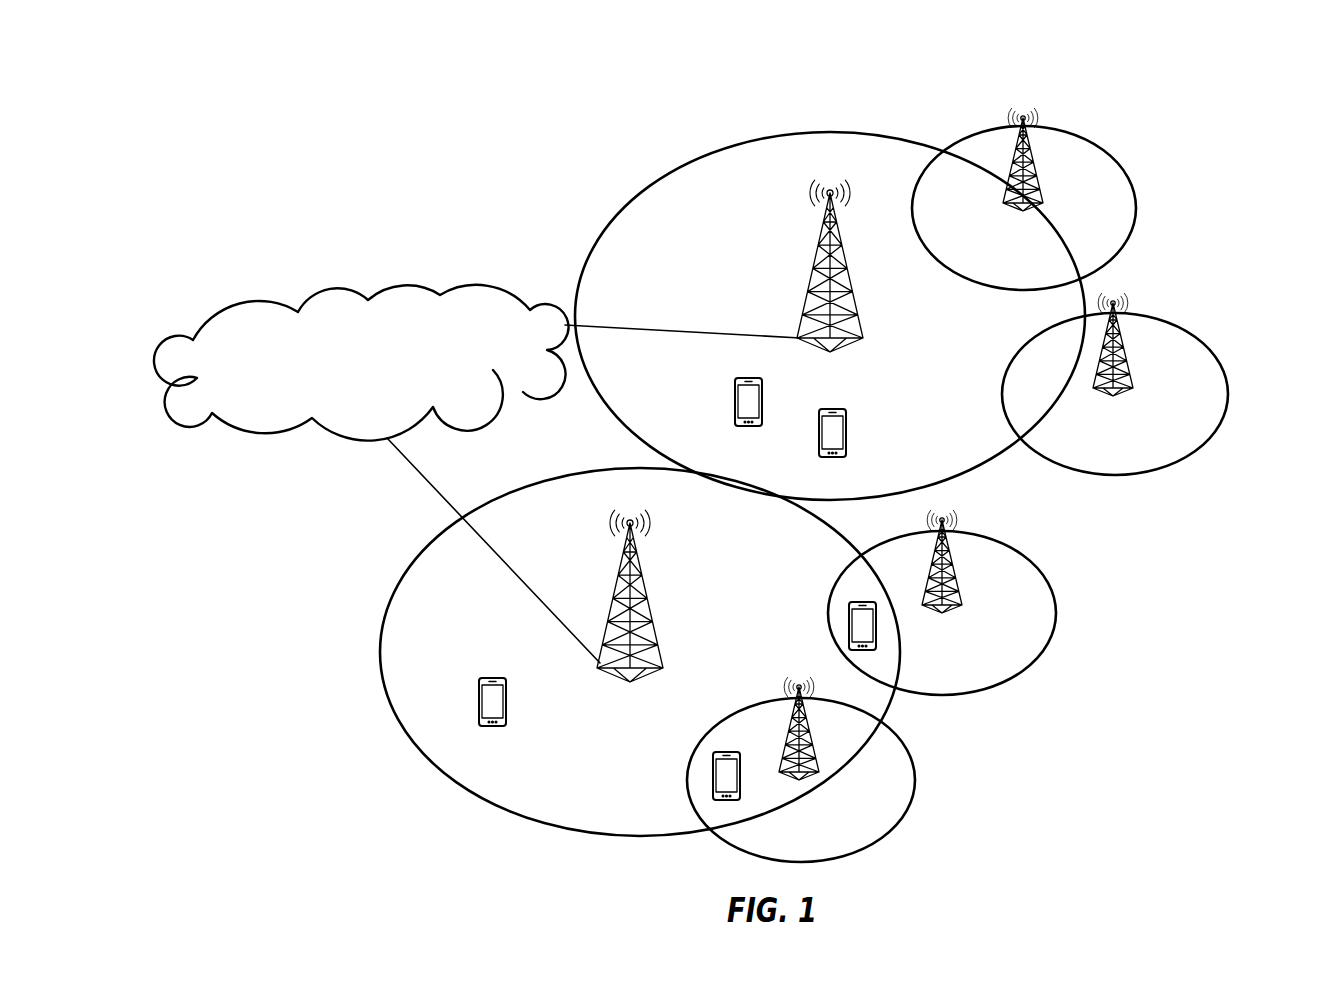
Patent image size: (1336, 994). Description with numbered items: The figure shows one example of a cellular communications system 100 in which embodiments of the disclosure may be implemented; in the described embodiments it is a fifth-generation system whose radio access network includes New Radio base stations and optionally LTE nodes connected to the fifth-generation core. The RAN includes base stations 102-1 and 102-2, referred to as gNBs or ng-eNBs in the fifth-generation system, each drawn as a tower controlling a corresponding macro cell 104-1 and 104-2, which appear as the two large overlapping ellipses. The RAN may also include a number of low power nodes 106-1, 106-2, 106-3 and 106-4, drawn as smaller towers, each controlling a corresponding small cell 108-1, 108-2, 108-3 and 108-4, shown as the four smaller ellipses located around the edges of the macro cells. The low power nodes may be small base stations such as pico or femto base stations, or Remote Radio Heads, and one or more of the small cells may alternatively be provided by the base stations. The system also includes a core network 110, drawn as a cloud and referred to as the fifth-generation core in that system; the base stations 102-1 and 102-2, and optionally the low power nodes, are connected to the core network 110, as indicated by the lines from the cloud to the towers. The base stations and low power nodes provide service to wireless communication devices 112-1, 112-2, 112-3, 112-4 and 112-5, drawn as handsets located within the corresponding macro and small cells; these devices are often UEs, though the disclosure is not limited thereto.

The cellular communications system 100 is at (1208, 93).
The base station 102-1 is at (650, 617).
The base station 102-2 is at (812, 288).
The macro cell 104-1 is at (493, 810).
The macro cell 104-2 is at (833, 132).
The low power node 106-1 is at (808, 772).
The low power node 106-2 is at (955, 600).
The low power node 106-3 is at (1122, 387).
The low power node 106-4 is at (1032, 198).
The small cell 108-1 is at (915, 782).
The small cell 108-2 is at (1055, 623).
The small cell 108-3 is at (1228, 402).
The small cell 108-4 is at (1137, 197).
The core network 110 is at (378, 406).
The wireless communication device 112-1 is at (740, 785).
The wireless communication device 112-2 is at (876, 628).
The wireless communication device 112-3 is at (508, 700).
The wireless communication device 112-4 is at (763, 408).
The wireless communication device 112-5 is at (850, 430).